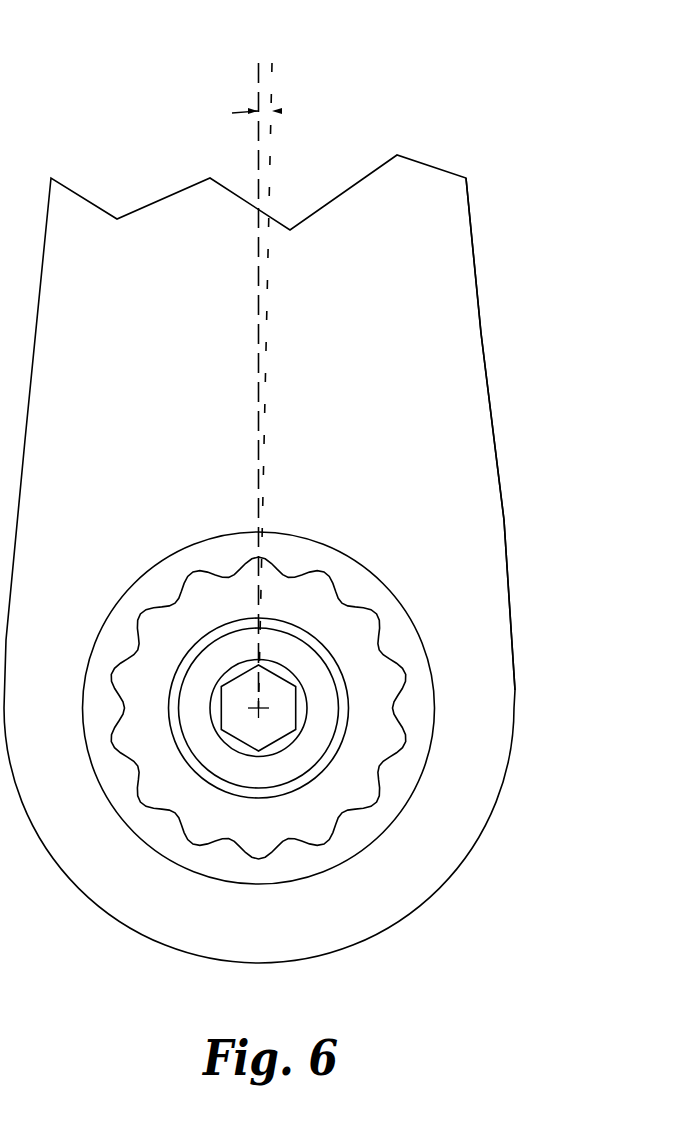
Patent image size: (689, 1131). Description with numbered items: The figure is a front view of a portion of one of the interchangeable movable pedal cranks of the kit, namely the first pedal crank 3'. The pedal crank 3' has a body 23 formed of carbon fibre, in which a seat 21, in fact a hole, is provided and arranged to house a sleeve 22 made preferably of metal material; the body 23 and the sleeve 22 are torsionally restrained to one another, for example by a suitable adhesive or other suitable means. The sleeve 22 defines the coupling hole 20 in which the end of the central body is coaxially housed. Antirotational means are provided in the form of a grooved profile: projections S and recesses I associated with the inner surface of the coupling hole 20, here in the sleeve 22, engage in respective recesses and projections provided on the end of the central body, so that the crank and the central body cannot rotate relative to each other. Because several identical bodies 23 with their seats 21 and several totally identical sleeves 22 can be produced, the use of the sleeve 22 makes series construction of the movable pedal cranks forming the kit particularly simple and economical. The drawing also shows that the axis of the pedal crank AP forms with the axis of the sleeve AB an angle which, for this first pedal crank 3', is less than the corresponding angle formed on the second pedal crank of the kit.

The first pedal crank 3' is at (288, 559).
The body 23 is at (481, 333).
The seat 21 is at (402, 601).
The sleeve 22 is at (402, 642).
The coupling hole 20 is at (366, 740).
The projections S is at (178, 600).
The recesses I is at (140, 608).
The axis of the pedal crank AP is at (257, 72).
The axis of the sleeve AB is at (272, 79).